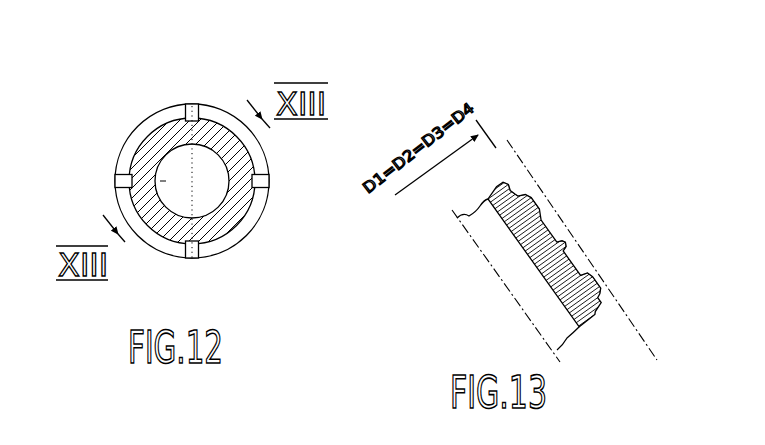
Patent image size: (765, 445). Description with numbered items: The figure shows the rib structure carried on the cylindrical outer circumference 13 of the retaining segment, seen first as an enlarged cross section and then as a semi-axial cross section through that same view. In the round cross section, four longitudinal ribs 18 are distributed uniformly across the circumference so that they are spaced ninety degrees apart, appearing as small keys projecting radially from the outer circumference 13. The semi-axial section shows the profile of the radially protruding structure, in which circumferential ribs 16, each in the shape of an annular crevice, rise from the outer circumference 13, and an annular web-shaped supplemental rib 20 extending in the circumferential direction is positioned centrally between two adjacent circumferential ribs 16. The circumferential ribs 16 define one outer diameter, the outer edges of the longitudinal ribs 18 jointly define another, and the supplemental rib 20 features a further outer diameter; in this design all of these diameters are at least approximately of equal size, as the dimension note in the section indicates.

In FIG. 12, the outer circumference 13 is at (143, 138).
In FIG. 13, the outer circumference 13 is at (549, 229).
In FIG. 13, the circumferential rib 16 is at (541, 202).
In FIG. 12, the longitudinal rib 18 is at (192, 104).
In FIG. 12, the supplemental rib 20 is at (237, 240).
In FIG. 13, the supplemental rib 20 is at (568, 246).